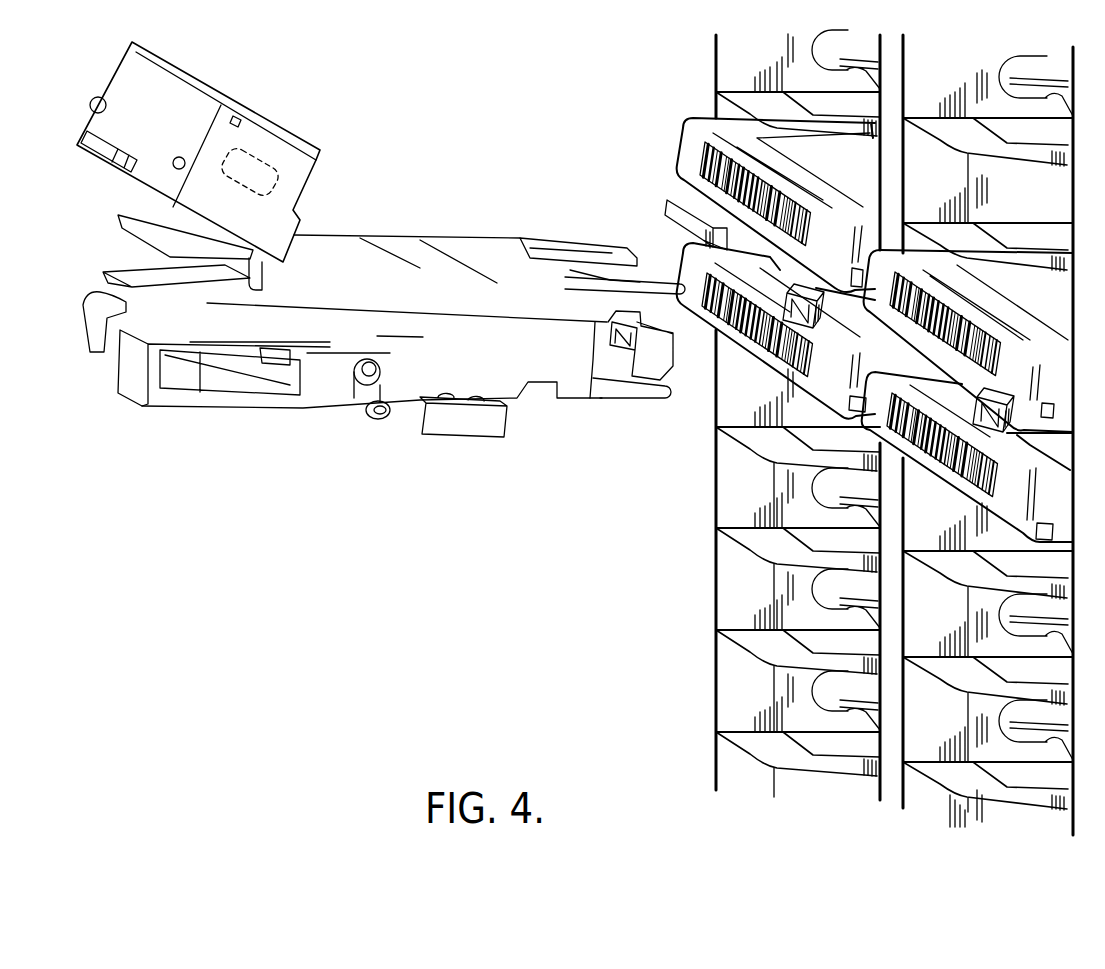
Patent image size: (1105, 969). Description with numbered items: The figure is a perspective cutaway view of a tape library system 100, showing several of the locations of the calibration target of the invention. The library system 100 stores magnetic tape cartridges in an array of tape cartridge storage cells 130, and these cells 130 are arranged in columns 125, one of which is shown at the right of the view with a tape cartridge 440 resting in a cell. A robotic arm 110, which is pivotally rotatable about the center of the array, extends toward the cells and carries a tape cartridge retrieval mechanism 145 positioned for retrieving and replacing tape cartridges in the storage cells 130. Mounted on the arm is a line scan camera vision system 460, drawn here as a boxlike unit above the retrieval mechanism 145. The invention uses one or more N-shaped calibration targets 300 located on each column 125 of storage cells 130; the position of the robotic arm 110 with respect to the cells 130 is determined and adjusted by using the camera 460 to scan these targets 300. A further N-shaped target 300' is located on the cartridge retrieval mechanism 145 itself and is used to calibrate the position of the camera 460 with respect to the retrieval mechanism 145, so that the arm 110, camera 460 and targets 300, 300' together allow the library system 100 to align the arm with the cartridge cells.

The tape library system 100 is at (505, 583).
The robotic arm 110 is at (418, 246).
The column 125 is at (848, 772).
The tape cartridge storage cell 130 is at (745, 677).
The tape cartridge retrieval mechanism 145 is at (584, 243).
The calibration target 300 is at (856, 392).
The N-shaped target on retrieval mechanism 300' is at (604, 394).
The tape cartridge 440 is at (690, 153).
The line scan camera vision system 460 is at (293, 131).